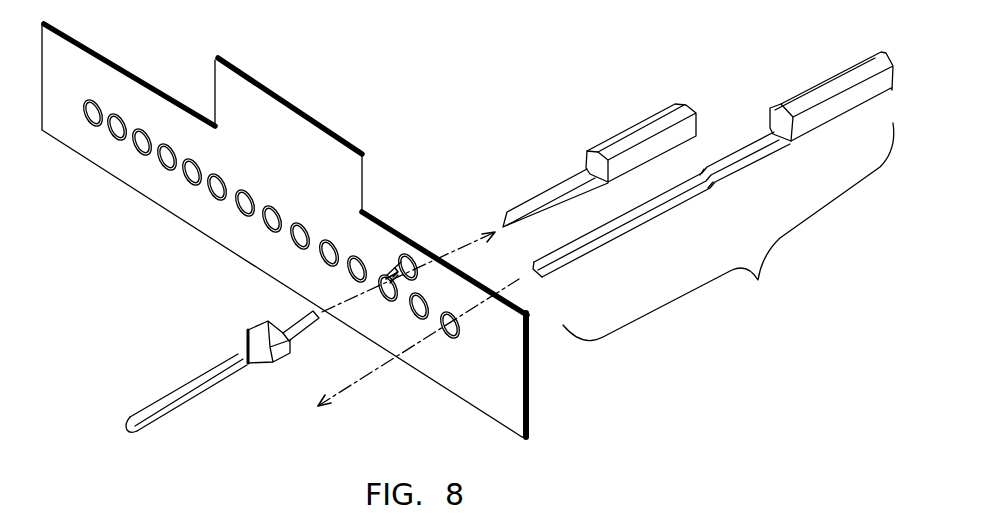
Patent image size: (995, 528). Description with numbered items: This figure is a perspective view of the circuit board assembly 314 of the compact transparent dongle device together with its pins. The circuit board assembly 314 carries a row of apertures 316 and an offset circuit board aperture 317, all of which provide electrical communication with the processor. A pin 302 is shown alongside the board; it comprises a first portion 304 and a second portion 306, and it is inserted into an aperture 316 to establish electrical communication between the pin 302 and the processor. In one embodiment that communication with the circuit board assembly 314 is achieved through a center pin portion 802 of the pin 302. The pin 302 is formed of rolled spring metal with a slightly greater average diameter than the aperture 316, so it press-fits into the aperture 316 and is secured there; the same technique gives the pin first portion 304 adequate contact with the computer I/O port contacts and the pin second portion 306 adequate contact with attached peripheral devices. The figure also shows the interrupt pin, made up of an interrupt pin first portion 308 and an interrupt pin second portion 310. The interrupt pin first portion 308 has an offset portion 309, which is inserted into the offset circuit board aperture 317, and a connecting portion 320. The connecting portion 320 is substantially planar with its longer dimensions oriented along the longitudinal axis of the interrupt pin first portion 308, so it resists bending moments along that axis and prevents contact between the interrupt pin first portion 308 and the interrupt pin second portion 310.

The circuit board assembly 314 is at (303, 107).
The aperture 316 is at (250, 193).
The offset circuit board aperture 317 is at (403, 258).
The offset portion 309 is at (293, 313).
The connecting portion 320 is at (247, 337).
The interrupt pin first portion 308 is at (128, 418).
The interrupt pin second portion 310 is at (617, 133).
The pin first portion 304 is at (699, 172).
The pin second portion 306 is at (884, 45).
The center pin portion 802 is at (722, 174).
The pin 302 is at (728, 232).